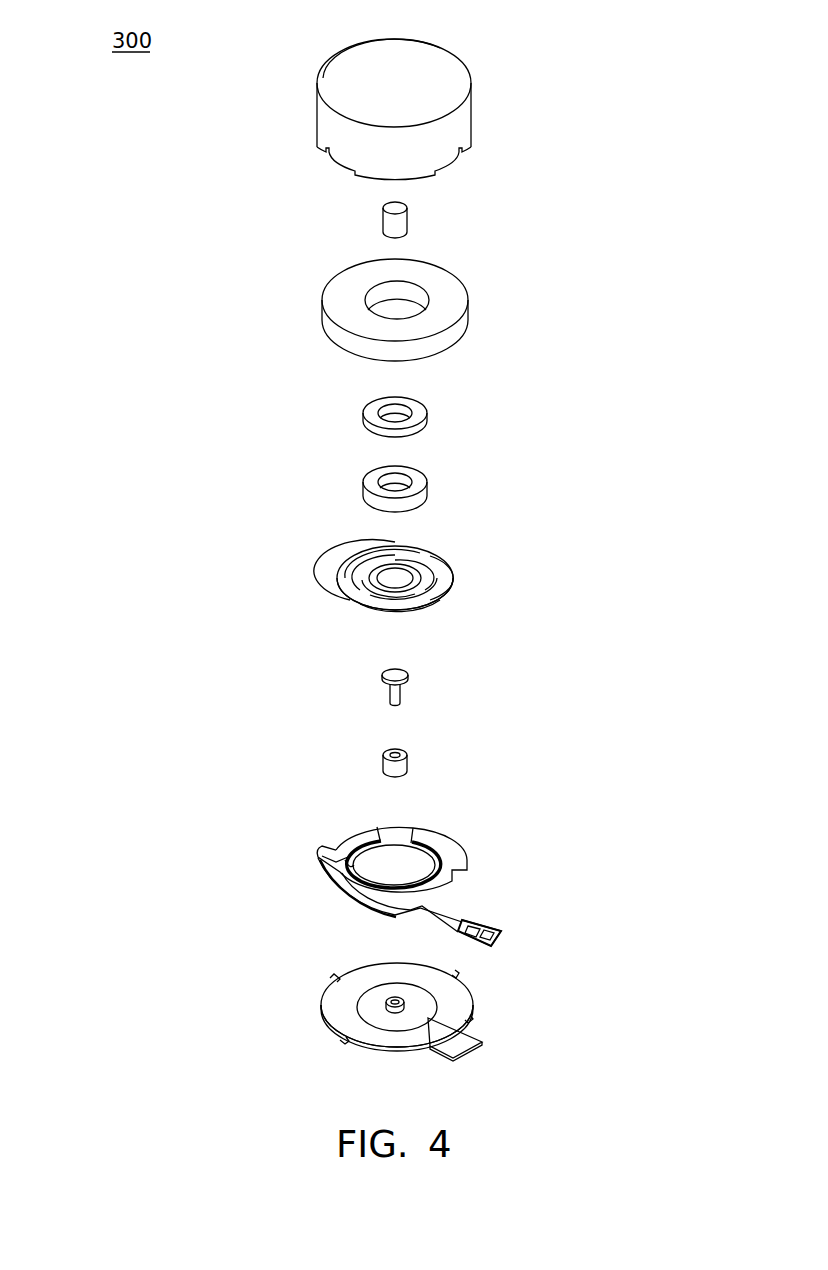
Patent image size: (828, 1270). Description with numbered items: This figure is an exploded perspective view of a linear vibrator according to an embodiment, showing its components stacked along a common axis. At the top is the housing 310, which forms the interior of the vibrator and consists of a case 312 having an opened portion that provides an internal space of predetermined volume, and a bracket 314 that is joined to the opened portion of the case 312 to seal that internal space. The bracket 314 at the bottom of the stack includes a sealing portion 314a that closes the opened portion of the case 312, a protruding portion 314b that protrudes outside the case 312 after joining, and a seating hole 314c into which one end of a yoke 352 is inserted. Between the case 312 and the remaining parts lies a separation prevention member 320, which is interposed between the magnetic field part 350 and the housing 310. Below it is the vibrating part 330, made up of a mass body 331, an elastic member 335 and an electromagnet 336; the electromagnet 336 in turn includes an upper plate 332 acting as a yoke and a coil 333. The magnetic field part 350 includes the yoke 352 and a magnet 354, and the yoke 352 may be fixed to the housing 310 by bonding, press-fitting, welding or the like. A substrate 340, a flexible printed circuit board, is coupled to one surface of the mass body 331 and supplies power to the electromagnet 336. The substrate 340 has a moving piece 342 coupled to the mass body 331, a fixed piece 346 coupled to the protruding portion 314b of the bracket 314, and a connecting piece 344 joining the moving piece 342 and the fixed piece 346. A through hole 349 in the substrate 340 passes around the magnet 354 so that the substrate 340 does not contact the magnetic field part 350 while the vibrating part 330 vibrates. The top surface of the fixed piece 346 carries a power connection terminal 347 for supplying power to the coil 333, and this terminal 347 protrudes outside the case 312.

The housing 310 is at (123, 1032).
The case 312 is at (325, 118).
The separation prevention member 320 is at (408, 214).
The vibrating part 330 is at (612, 290).
The mass body 331 is at (462, 298).
The upper plate 332 is at (426, 413).
The coil 333 is at (426, 483).
The elastic member 335 is at (450, 568).
The electromagnet 336 is at (553, 402).
The substrate 340 is at (466, 858).
The moving piece 342 is at (440, 838).
The connecting piece 344 is at (382, 908).
The fixed piece 346 is at (467, 922).
The power connection terminal 347 is at (495, 942).
The through hole 349 is at (372, 858).
The magnetic field part 350 is at (555, 675).
The yoke 352 is at (408, 677).
The magnet 354 is at (409, 756).
The bracket 314 is at (192, 998).
The sealing portion 314a is at (330, 1014).
The protruding portion 314b is at (453, 1048).
The seating hole 314c is at (406, 1000).